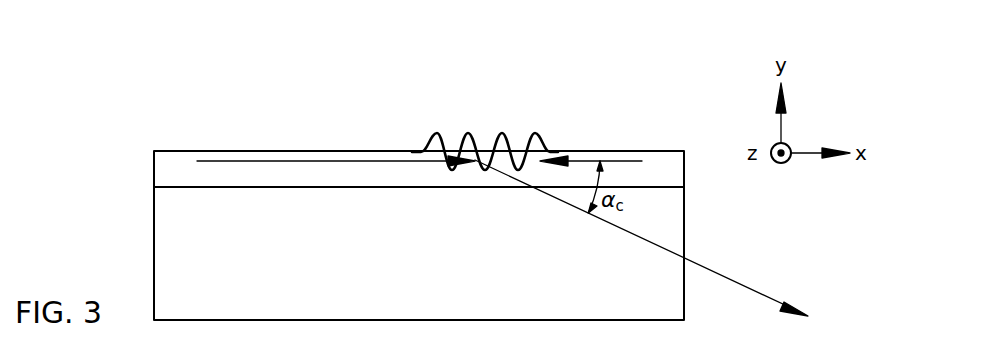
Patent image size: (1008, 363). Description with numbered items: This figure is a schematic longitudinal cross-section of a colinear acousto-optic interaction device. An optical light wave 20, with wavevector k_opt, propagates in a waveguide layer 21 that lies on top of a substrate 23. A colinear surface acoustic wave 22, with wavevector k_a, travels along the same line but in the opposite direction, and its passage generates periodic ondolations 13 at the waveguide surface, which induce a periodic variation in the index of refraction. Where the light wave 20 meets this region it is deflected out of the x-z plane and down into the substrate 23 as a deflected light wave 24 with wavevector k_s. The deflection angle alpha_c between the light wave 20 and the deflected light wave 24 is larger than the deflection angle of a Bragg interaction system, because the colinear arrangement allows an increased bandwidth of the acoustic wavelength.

The periodic ondolations 13 is at (502, 133).
The optical light wave 20 is at (278, 160).
The waveguide layer 21 is at (165, 176).
The colinear surface acoustic wave 22 is at (617, 161).
The substrate 23 is at (419, 235).
The deflected light wave 24 is at (728, 278).